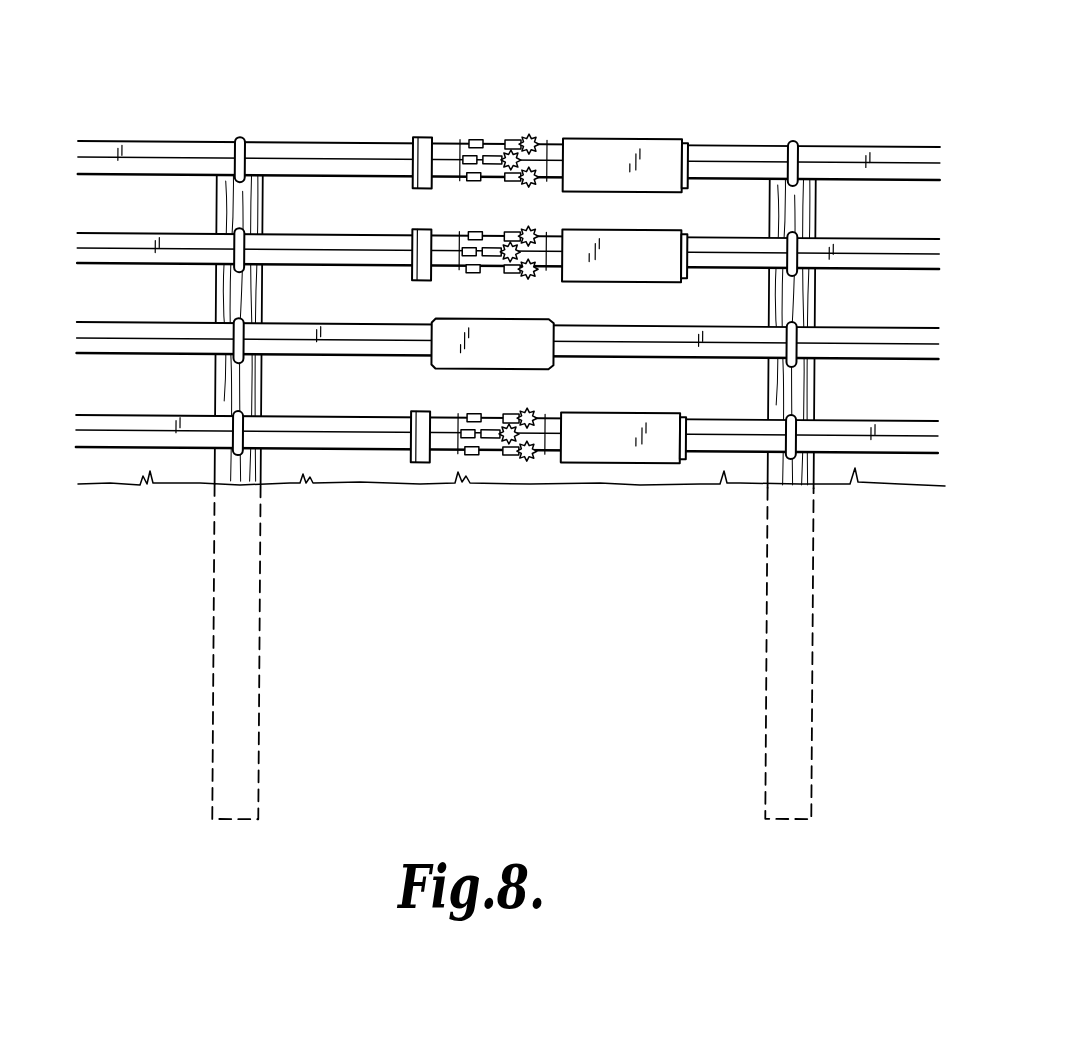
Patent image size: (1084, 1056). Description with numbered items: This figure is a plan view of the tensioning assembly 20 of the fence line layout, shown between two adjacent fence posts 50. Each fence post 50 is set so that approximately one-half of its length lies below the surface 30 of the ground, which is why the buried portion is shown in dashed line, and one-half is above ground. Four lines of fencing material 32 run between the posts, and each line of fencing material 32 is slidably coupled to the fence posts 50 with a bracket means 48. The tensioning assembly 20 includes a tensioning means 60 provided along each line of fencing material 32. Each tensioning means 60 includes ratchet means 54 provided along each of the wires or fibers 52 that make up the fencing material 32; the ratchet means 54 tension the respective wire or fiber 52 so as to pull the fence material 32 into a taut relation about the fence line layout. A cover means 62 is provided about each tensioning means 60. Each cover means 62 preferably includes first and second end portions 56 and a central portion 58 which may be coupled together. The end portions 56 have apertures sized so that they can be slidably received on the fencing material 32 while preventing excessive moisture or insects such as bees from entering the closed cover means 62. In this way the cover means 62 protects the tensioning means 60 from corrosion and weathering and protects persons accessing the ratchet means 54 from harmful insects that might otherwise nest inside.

The tensioning assembly 20 is at (393, 76).
The surface of the ground 30 is at (347, 483).
The fencing material 32 is at (146, 222).
The bracket means 48 is at (234, 268).
The fence posts 50 is at (270, 193).
The wires or fibers 52 is at (433, 152).
The ratchet means 54 is at (521, 180).
The first and second end portions 56 is at (412, 137).
The central portion 58 is at (603, 463).
The tensioning means 60 is at (495, 464).
The cover means 62 is at (507, 371).